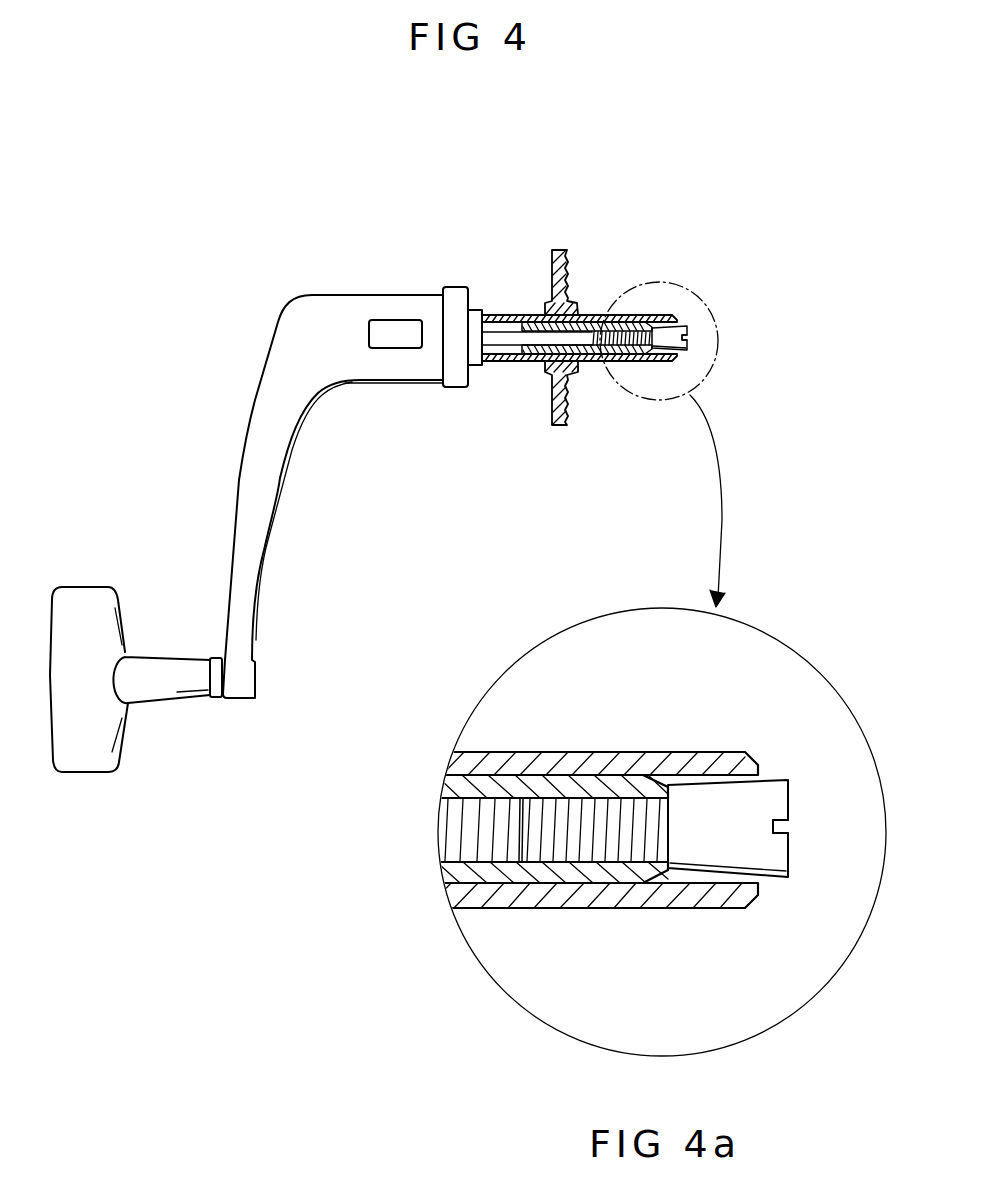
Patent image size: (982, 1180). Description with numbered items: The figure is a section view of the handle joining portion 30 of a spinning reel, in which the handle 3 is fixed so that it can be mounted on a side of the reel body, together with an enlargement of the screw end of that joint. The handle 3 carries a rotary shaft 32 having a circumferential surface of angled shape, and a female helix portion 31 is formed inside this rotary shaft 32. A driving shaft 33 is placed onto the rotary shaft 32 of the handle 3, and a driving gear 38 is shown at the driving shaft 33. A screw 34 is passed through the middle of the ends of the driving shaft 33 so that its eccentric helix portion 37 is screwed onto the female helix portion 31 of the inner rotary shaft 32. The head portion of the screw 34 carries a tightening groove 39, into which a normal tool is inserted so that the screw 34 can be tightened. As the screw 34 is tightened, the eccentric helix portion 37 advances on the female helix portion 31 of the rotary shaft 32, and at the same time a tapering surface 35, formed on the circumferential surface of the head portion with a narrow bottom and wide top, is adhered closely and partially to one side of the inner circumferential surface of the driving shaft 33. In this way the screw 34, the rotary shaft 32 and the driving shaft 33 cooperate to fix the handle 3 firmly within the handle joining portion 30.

In FIG. 4, the handle 3 is at (230, 471).
In FIG. 4, the handle joining portion 30 is at (662, 264).
In FIG. 4, the female helix portion 31 is at (595, 356).
In FIG. 4A, the female helix portion 31 is at (447, 835).
In FIG. 4, the rotary shaft 32 is at (502, 315).
In FIG. 4A, the rotary shaft 32 is at (594, 830).
In FIG. 4, the driving shaft 33 is at (587, 322).
In FIG. 4A, the driving shaft 33 is at (464, 744).
In FIG. 4, the screw 34 is at (691, 312).
In FIG. 4A, the screw 34 is at (777, 763).
In FIG. 4, the tapering surface 35 is at (684, 350).
In FIG. 4A, the tapering surface 35 is at (772, 880).
In FIG. 4, the eccentric helix portion 37 is at (644, 356).
In FIG. 4A, the eccentric helix portion 37 is at (540, 805).
In FIG. 4, the driving gear 38 is at (552, 425).
In FIG. 4, the tightening groove 39 is at (689, 337).
In FIG. 4A, the tightening groove 39 is at (787, 827).